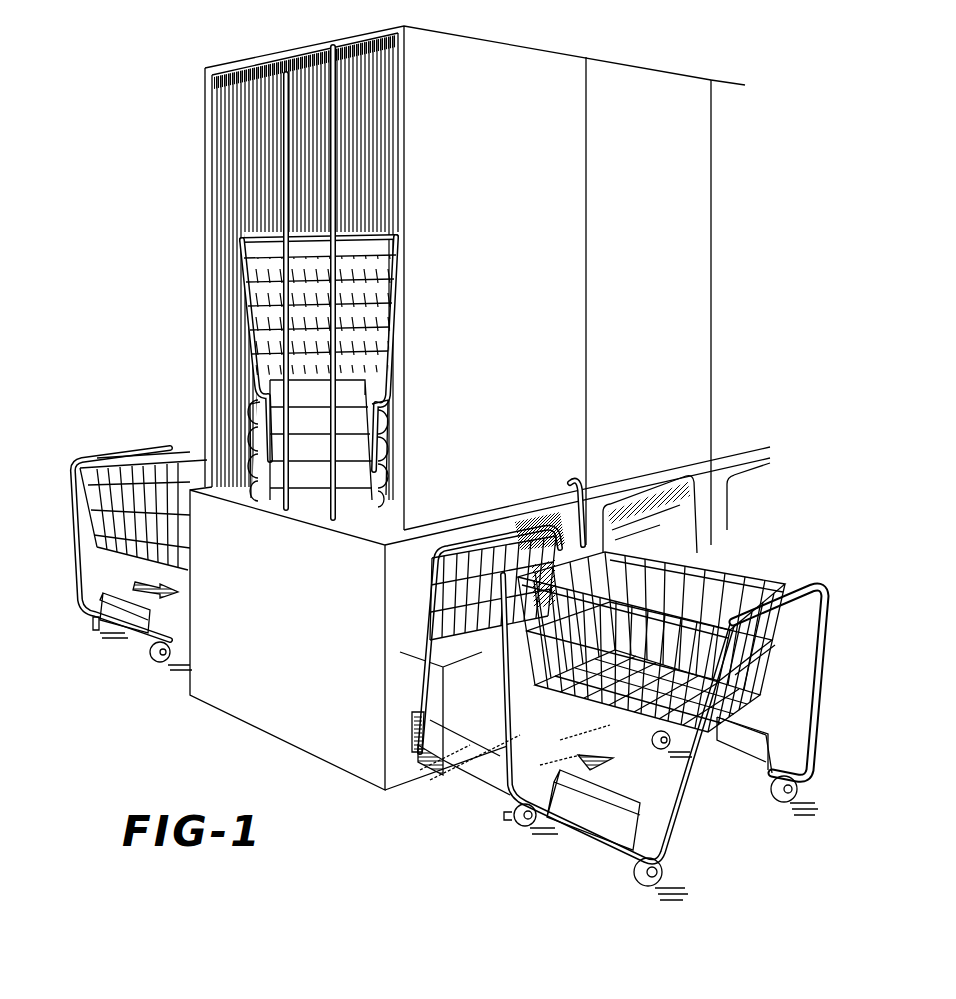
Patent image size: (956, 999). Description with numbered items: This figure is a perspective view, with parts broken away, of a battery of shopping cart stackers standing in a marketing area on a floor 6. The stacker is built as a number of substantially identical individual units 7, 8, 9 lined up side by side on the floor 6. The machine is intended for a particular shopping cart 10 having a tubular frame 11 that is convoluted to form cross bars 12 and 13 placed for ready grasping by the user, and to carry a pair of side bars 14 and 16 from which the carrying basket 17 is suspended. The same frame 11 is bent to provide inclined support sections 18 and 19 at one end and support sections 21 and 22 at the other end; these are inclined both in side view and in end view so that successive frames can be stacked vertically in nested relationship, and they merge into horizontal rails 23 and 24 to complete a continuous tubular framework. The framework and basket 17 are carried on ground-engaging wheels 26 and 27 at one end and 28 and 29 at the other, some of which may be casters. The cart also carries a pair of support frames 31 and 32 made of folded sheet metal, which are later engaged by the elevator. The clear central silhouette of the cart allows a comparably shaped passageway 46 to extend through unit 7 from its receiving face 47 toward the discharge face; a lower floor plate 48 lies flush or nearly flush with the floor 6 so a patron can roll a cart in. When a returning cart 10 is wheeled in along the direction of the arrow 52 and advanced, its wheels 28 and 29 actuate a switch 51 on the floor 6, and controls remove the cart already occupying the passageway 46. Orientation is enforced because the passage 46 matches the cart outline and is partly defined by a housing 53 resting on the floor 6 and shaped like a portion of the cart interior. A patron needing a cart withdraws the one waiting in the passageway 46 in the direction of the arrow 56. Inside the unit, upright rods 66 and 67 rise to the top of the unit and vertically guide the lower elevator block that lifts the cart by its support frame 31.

The floor 6 is at (484, 750).
The stacker unit 7 is at (522, 58).
The stacker unit 8 is at (648, 76).
The stacker unit 9 is at (722, 83).
The shopping cart 10 is at (637, 722).
The tubular frame 11 is at (690, 775).
The cross bar 12 is at (585, 545).
The cross bar 13 is at (805, 588).
The side bar 14 is at (690, 596).
The side bar 16 is at (745, 572).
The carrying basket 17 is at (765, 670).
The inclined support section 18 is at (500, 792).
The inclined support section 19 is at (625, 600).
The support section 21 is at (675, 855).
The support section 22 is at (810, 770).
The horizontal rail 23 is at (652, 845).
The horizontal rail 24 is at (775, 765).
The ground-engaging wheel 26 is at (648, 886).
The ground-engaging wheel 27 is at (785, 801).
The ground-engaging wheel 28 is at (525, 826).
The ground-engaging wheel 29 is at (664, 748).
The support frame 31 is at (610, 822).
The support frame 32 is at (748, 727).
The passageway 46 is at (412, 708).
The receiving face 47 is at (478, 632).
The floor plate 48 is at (428, 770).
The switch 51 is at (505, 820).
The arrow 52 is at (596, 757).
The housing 53 is at (480, 618).
The arrow 56 is at (145, 588).
The upright rod 66 is at (284, 72).
The upright rod 67 is at (332, 50).